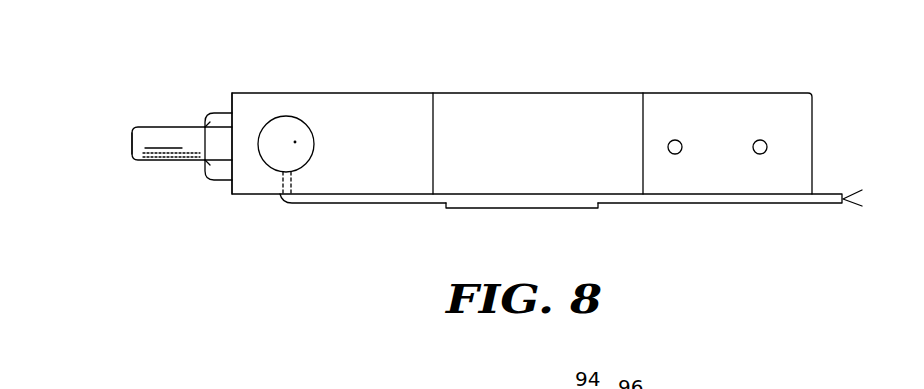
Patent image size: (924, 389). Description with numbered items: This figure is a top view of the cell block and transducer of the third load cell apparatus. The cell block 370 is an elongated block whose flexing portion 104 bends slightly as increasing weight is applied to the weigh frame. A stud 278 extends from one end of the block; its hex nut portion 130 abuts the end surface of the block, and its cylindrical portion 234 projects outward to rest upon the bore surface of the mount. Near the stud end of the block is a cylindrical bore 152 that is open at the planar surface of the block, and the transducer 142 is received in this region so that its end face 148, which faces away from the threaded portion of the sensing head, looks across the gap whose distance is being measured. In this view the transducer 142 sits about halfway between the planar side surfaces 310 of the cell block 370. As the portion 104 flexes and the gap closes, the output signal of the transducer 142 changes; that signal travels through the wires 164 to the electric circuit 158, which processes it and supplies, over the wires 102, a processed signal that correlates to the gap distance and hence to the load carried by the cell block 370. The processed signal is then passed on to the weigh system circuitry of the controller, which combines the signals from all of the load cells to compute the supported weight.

The wires 102 is at (782, 203).
The portion 104 is at (520, 110).
The hex nut portion 130 is at (222, 120).
The transducer 142 is at (313, 116).
The end face 148 is at (295, 142).
The cylindrical bore 152 is at (271, 124).
The electric circuit 158 is at (527, 205).
The wires 164 is at (352, 203).
The cylindrical portion 234 is at (162, 138).
The stud 278 is at (125, 155).
The planar side surfaces 310 is at (248, 92).
The cell block 370 is at (774, 82).